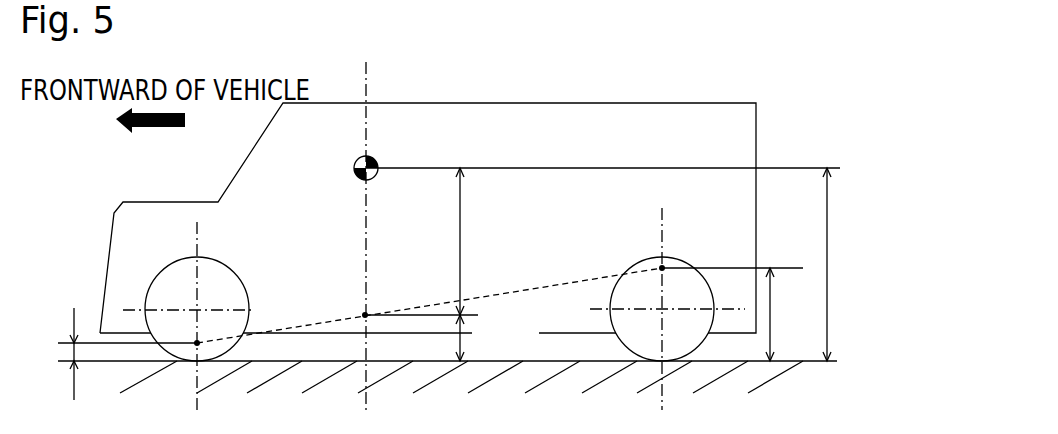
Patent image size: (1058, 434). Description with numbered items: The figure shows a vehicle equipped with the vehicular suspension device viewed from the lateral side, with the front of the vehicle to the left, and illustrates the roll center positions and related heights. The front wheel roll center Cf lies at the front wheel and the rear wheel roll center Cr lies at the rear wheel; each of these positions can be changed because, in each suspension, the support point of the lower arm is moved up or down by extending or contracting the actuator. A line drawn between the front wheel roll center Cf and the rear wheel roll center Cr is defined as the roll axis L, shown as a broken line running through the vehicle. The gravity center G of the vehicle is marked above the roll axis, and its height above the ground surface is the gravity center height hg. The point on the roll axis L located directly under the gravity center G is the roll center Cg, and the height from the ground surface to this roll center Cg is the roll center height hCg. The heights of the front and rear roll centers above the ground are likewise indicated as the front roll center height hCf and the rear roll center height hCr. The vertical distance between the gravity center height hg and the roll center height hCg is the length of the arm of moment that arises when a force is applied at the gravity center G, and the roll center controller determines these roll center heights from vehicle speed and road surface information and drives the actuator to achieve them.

The gravity center G is at (378, 157).
The roll axis L is at (580, 278).
The front wheel roll center Cf is at (180, 328).
The roll center Cg is at (401, 299).
The rear wheel roll center Cr is at (731, 283).
The front roll center height hCf is at (107, 354).
The roll center height hCg is at (497, 338).
The rear roll center height hCr is at (791, 314).
The gravity center height hg is at (845, 264).